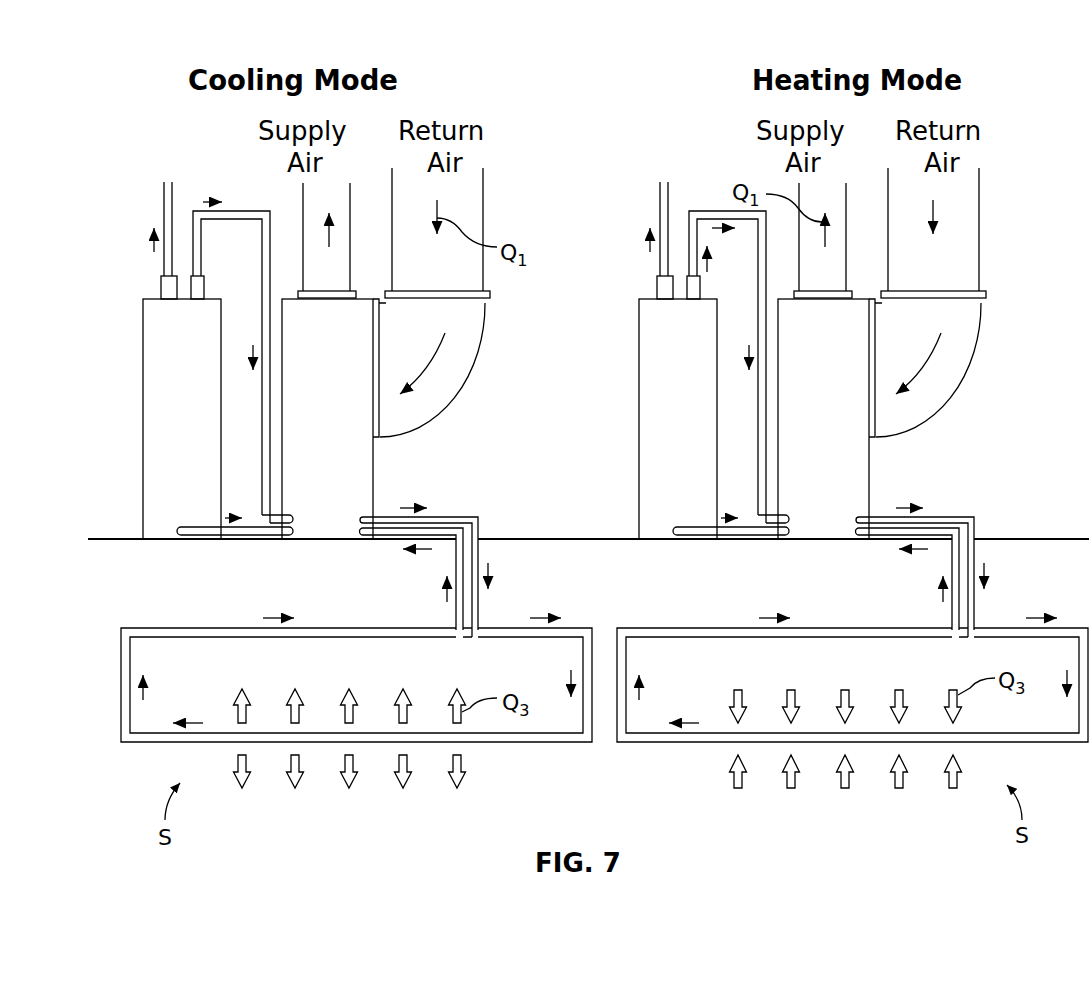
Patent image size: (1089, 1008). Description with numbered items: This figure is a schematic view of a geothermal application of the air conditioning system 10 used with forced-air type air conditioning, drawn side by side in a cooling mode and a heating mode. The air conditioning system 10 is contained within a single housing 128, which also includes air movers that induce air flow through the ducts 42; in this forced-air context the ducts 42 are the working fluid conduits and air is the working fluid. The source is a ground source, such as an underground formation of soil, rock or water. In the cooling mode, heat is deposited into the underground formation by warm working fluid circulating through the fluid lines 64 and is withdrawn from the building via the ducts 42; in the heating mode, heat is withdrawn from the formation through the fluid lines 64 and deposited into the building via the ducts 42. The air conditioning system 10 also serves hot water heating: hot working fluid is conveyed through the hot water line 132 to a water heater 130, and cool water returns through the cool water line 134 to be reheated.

The air conditioning system 10 is at (416, 482).
The ducts 42 is at (504, 179).
The fluid lines 64 is at (121, 710).
The housing 128 is at (360, 440).
The water heater 130 is at (158, 361).
The hot water line 132 is at (163, 205).
The cool water line 134 is at (243, 211).